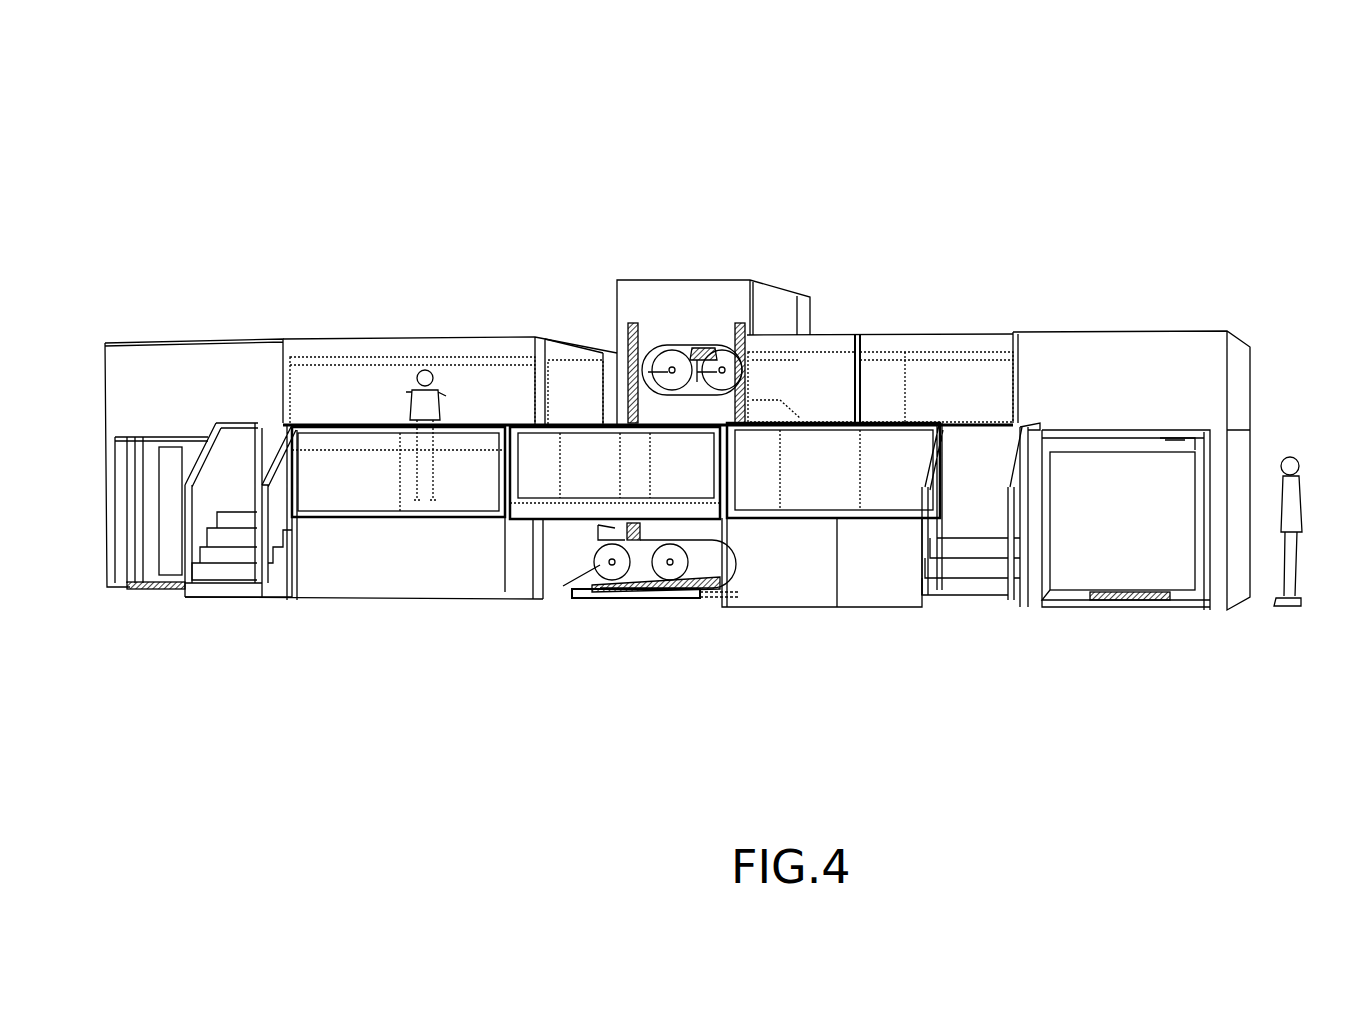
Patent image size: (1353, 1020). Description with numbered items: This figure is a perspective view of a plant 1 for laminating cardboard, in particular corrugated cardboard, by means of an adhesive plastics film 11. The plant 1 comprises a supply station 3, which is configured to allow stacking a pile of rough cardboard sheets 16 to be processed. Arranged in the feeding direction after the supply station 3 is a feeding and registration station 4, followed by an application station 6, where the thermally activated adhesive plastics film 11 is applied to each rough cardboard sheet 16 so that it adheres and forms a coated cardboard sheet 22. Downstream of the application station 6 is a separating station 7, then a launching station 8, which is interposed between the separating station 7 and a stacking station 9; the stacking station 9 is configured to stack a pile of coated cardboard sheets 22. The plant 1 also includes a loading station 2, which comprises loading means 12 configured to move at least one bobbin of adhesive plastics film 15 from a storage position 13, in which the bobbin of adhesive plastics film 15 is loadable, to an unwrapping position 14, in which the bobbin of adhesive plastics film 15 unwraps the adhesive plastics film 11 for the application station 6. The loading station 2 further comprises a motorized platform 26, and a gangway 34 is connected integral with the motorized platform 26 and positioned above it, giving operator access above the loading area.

The plant for laminating cardboard 1 is at (473, 132).
The loading station 2 is at (629, 667).
The supply station 3 is at (1130, 350).
The feeding and registration station 4 is at (971, 318).
The application station 6 is at (823, 322).
The separating station 7 is at (586, 325).
The launching station 8 is at (411, 326).
The stacking station 9 is at (226, 326).
The adhesive plastics film 11 is at (681, 598).
The loading means 12 is at (712, 590).
The storage position 13 is at (614, 605).
The unwrapping position 14 is at (684, 316).
The bobbin of adhesive plastics film 15 is at (727, 348).
The rough cardboard sheet 16 is at (1125, 545).
The coated cardboard sheet 22 is at (178, 588).
The motorized platform 26 is at (720, 594).
The gangway 34 is at (550, 462).